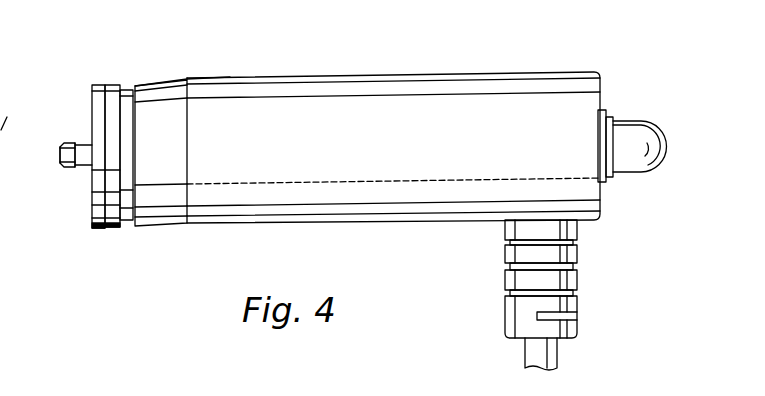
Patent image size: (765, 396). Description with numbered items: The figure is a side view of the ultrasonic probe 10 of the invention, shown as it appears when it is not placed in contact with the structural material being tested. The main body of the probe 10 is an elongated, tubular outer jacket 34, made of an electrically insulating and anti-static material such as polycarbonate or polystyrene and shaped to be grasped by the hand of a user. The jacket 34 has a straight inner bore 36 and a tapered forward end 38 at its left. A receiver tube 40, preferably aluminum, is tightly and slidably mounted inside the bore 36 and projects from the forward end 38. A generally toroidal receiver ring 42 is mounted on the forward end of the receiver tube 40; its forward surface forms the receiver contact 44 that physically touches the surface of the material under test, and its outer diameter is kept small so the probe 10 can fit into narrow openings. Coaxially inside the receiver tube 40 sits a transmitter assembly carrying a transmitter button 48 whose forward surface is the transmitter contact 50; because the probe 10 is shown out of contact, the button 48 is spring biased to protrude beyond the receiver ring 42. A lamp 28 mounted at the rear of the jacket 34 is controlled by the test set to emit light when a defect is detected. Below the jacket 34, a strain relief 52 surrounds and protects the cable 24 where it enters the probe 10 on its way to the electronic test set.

The probe 10 is at (357, 68).
The cable 24 is at (535, 352).
The lamp 28 is at (636, 124).
The outer jacket 34 is at (476, 72).
The inner bore 36 is at (134, 112).
The tapered forward end 38 is at (163, 80).
The receiver tube 40 is at (126, 222).
The receiver ring 42 is at (108, 85).
The receiver contact 44 is at (89, 90).
The transmitter button 48 is at (65, 141).
The transmitter contact 50 is at (60, 160).
The strain relief 52 is at (508, 308).